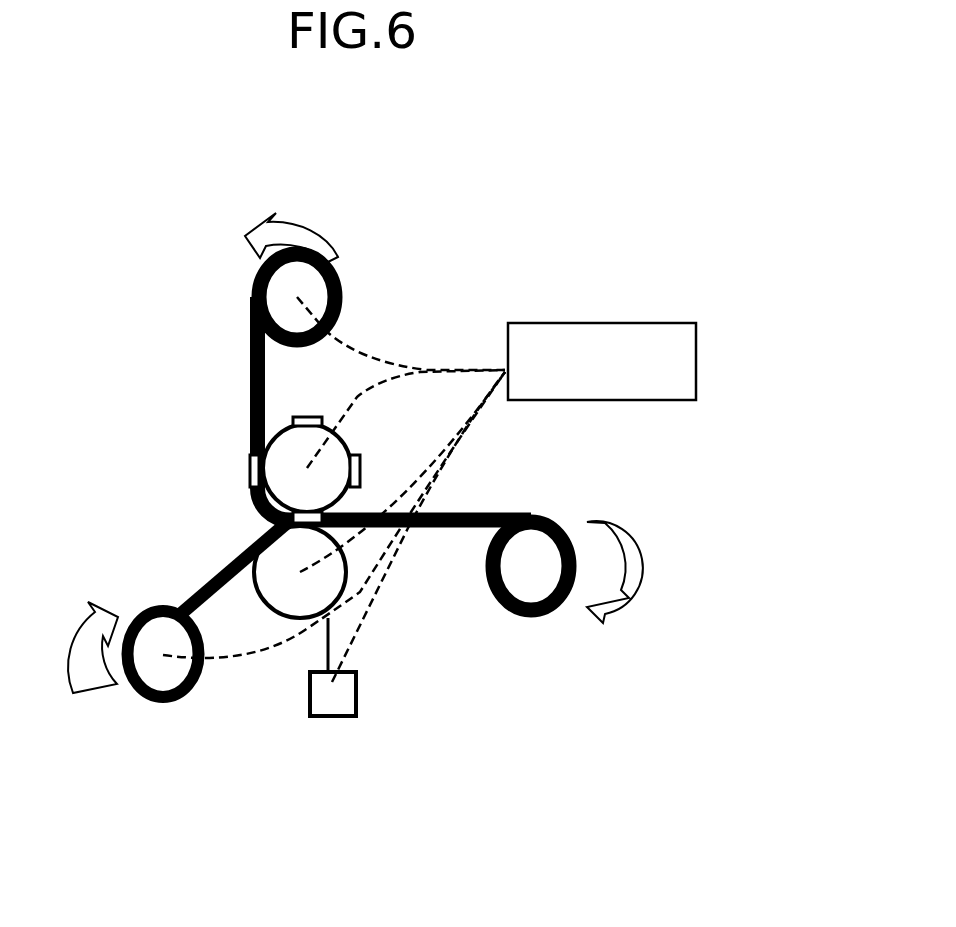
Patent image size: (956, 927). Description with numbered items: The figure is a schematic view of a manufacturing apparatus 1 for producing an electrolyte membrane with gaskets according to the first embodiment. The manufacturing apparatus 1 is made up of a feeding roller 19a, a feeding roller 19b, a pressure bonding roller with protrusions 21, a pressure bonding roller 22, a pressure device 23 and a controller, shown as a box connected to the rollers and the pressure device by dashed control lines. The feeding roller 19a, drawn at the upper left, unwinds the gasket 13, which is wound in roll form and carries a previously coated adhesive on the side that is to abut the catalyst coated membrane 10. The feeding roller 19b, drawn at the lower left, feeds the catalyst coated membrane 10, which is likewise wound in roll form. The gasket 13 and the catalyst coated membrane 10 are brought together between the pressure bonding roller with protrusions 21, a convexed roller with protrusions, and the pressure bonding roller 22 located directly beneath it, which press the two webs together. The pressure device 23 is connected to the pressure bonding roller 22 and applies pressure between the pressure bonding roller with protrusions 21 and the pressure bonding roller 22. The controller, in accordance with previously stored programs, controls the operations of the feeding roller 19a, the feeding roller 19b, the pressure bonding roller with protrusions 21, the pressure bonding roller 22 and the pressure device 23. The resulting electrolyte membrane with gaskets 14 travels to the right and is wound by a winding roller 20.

The manufacturing apparatus 1 is at (442, 180).
The catalyst coated membrane 10 is at (198, 572).
The gasket 13 is at (252, 394).
The electrolyte membrane with gaskets 14 is at (435, 510).
The feeding roller 19a is at (310, 298).
The feeding roller 19b is at (153, 690).
The winding roller 20 is at (537, 596).
The pressure bonding roller with protrusions 21 is at (340, 451).
The pressure bonding roller 22 is at (333, 570).
The pressure device 23 is at (343, 690).